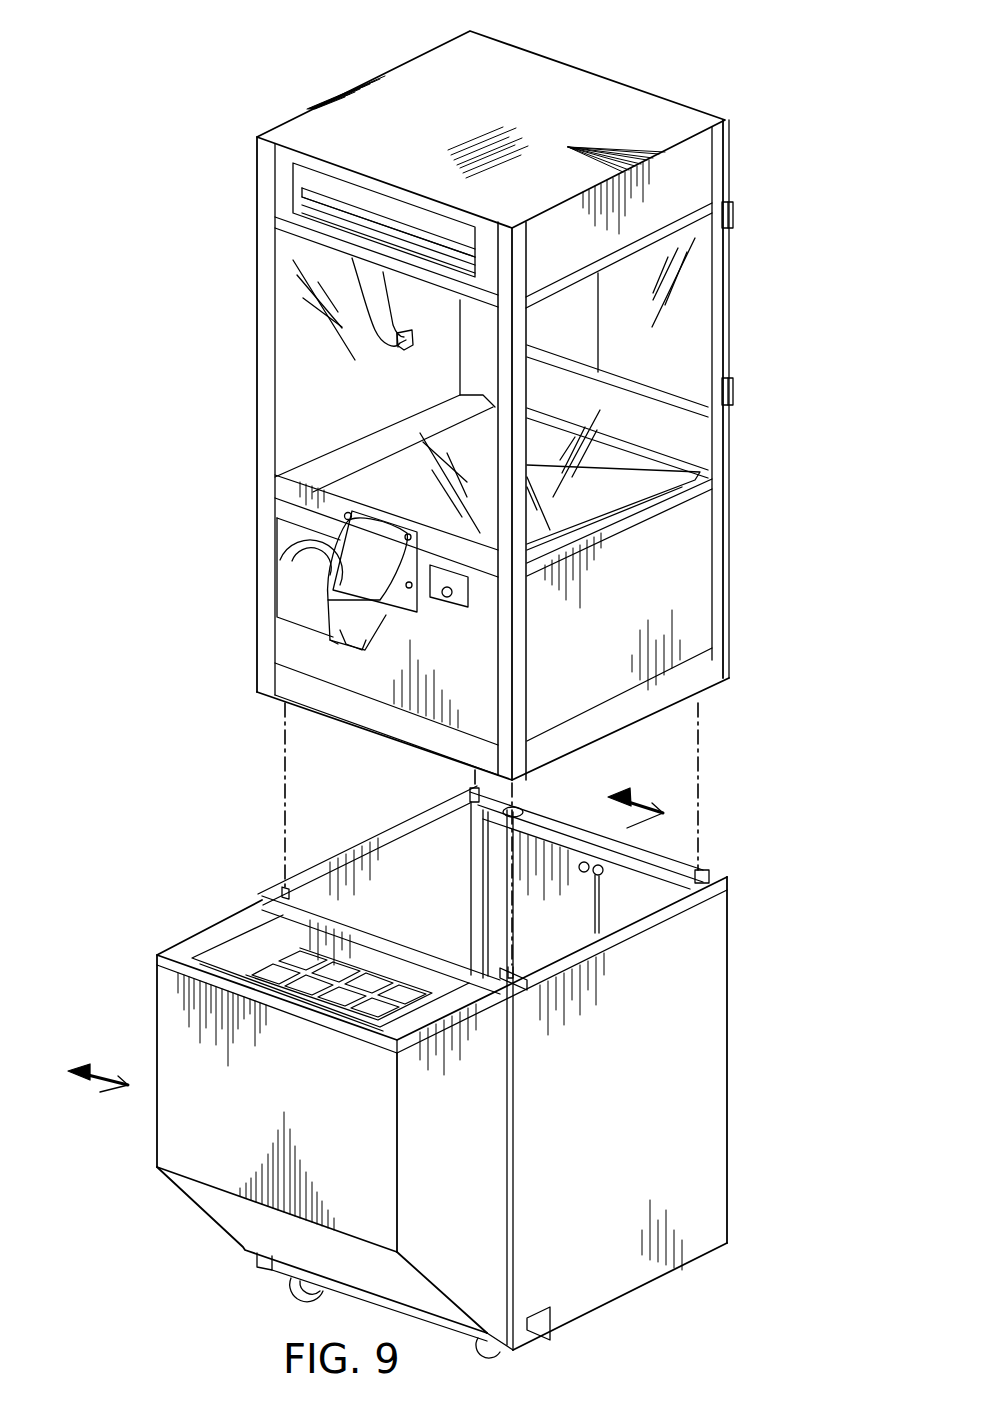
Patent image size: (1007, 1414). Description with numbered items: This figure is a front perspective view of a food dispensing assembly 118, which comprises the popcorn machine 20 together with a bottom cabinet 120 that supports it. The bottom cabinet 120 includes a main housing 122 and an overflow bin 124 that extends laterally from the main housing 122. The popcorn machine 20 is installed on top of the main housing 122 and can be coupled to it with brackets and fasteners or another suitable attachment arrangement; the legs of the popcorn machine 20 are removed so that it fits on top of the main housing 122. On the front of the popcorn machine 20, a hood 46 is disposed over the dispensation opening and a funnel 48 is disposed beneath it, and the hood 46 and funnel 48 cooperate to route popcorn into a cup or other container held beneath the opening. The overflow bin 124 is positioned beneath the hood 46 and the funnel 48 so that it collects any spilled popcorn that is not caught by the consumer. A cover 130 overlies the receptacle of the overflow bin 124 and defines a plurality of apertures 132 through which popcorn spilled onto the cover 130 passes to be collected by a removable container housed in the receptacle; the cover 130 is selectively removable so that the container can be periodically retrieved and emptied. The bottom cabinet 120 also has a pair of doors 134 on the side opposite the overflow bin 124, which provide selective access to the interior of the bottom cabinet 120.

The food dispensing assembly 118 is at (117, 63).
The popcorn machine 20 is at (339, 79).
The hood 46 is at (348, 568).
The funnel 48 is at (356, 636).
The bottom cabinet 120 is at (788, 1100).
The main housing 122 is at (720, 1010).
The overflow bin 124 is at (168, 1138).
The cover 130 is at (232, 958).
The apertures 132 is at (285, 950).
The pair of doors 134 is at (497, 856).